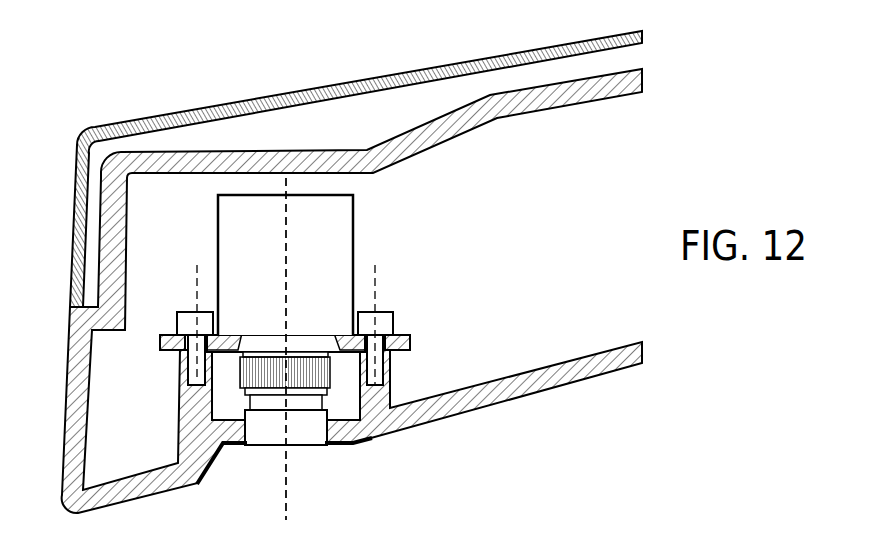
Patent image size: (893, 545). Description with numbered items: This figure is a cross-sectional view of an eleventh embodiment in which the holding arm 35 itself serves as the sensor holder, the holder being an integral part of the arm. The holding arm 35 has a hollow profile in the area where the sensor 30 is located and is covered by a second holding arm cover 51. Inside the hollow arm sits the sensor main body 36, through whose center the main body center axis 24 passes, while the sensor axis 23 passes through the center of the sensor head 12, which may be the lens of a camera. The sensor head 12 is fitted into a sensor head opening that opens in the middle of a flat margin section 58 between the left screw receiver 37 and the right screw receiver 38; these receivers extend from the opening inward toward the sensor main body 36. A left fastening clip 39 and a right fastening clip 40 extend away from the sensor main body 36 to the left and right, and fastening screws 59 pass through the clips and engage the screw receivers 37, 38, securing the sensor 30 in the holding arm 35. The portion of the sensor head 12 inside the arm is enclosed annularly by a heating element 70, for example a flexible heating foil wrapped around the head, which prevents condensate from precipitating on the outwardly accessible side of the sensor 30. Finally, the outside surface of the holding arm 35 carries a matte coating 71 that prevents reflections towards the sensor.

The sensor head 12 is at (315, 435).
The sensor axis 23 is at (287, 497).
The main body center axis 24 is at (287, 497).
The sensor 30 is at (376, 238).
The holding arm 35 is at (457, 131).
The sensor main body 36 is at (329, 245).
The left screw receiver 37 is at (180, 413).
The right screw receiver 38 is at (395, 390).
The left fastening clip 39 is at (168, 335).
The right fastening clip 40 is at (401, 335).
The second holding arm cover 51 is at (72, 262).
The flat margin section 58 is at (226, 420).
The fastening screws 59 is at (190, 311).
The heating element 70 is at (328, 362).
The matte coating 71 is at (212, 471).